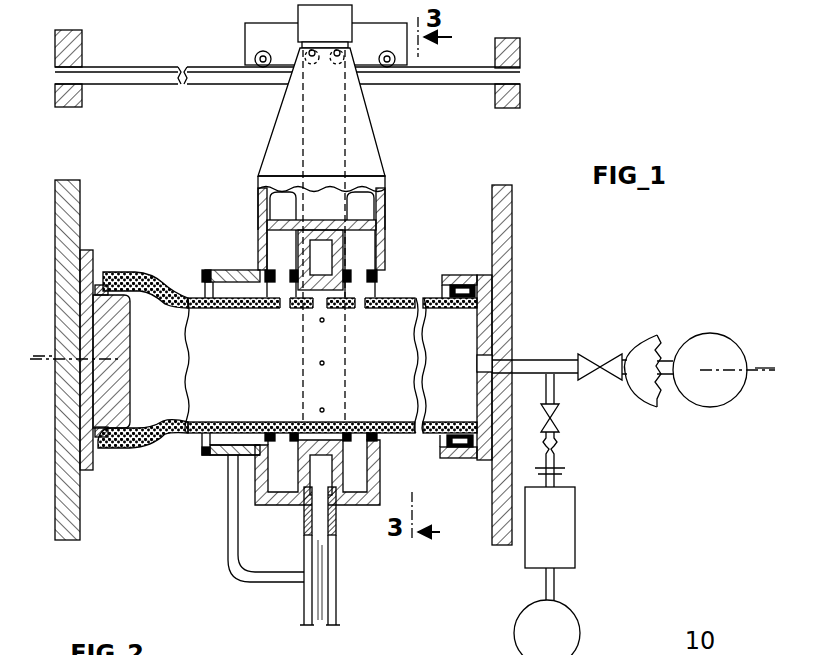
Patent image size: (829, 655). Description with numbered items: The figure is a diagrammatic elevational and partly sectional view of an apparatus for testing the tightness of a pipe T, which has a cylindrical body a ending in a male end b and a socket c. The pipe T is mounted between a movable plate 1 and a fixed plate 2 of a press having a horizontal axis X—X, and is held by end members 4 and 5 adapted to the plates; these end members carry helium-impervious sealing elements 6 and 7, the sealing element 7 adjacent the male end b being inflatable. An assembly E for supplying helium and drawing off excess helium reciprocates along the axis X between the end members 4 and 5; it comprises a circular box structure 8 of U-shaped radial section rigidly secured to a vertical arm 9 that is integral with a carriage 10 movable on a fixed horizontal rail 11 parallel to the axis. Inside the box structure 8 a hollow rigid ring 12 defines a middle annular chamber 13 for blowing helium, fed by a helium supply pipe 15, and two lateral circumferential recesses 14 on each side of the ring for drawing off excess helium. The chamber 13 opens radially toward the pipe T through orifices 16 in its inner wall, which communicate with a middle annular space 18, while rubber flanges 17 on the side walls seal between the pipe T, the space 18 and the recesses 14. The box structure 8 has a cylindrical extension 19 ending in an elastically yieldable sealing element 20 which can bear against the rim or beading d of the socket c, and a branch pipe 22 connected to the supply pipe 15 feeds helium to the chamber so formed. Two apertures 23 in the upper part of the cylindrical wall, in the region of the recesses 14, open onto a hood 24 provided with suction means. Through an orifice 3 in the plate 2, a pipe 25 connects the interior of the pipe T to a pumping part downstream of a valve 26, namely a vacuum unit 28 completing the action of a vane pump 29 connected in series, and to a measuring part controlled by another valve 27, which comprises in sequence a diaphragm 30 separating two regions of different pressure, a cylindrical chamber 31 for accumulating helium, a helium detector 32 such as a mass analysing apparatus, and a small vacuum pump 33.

The movable plate 1 is at (77, 190).
The fixed plate 2 is at (508, 214).
The orifice 3 is at (489, 358).
The end member 4 is at (88, 250).
The end member 5 is at (484, 276).
The sealing element 6 is at (103, 285).
The sealing element 7 is at (455, 276).
The box structure 8 is at (384, 266).
The vertical arm 9 is at (300, 141).
The carriage 10 is at (247, 37).
The fixed horizontal rail 11 is at (152, 70).
The hollow rigid ring 12 is at (326, 192).
The middle annular chamber 13 is at (328, 222).
The lateral circumferential recesses 14 is at (262, 236).
The helium supply pipe 15 is at (323, 573).
The orifices 16 is at (314, 272).
The rubber flanges 17 is at (284, 309).
The middle annular space 18 is at (320, 309).
The cylindrical extension 19 is at (240, 270).
The elastically yieldable sealing element 20 is at (203, 276).
The branch pipe 22 is at (238, 581).
The apertures 23 is at (292, 192).
The hood 24 is at (300, 121).
The pipe 25 is at (527, 360).
The valve 26 is at (581, 360).
The valve 27 is at (560, 410).
The vacuum unit 28 is at (642, 342).
The vane pump 29 is at (708, 352).
The diaphragm 30 is at (558, 447).
The cylindrical chamber 31 is at (565, 477).
The helium detector 32 is at (570, 524).
The small vacuum pump 33 is at (578, 621).
The cylindrical body a is at (240, 422).
The male end b is at (460, 423).
The socket c is at (135, 437).
The rim or beading d is at (106, 440).
The assembly for supplying helium and drawing off excess helium E is at (390, 198).
The pipe T is at (401, 297).
The horizontal axis X— X is at (402, 350).